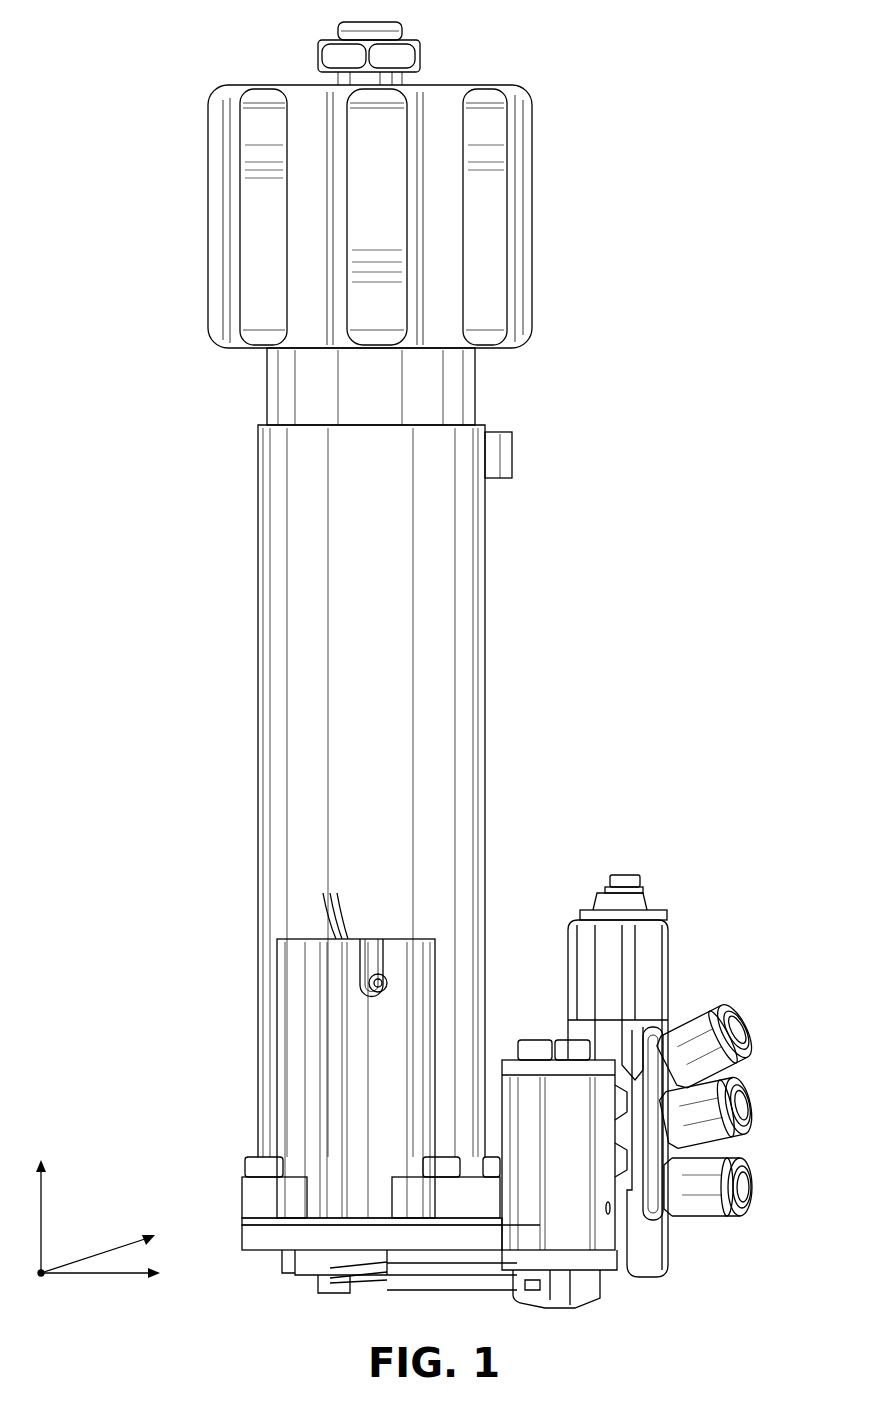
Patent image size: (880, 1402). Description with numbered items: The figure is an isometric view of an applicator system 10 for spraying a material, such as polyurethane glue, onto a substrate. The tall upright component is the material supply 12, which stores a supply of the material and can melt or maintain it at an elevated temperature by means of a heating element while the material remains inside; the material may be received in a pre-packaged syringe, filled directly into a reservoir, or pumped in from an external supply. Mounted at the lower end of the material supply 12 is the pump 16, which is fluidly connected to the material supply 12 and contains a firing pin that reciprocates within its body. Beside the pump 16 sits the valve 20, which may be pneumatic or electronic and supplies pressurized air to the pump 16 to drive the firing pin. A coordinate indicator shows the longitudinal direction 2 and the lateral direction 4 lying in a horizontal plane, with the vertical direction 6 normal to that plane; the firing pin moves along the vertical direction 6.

The applicator system 10 is at (96, 92).
The material supply 12 is at (278, 583).
The pump 16 is at (523, 1087).
The valve 20 is at (642, 973).
The longitudinal direction 2 is at (100, 1285).
The lateral direction 4 is at (98, 1244).
The vertical direction 6 is at (32, 1216).